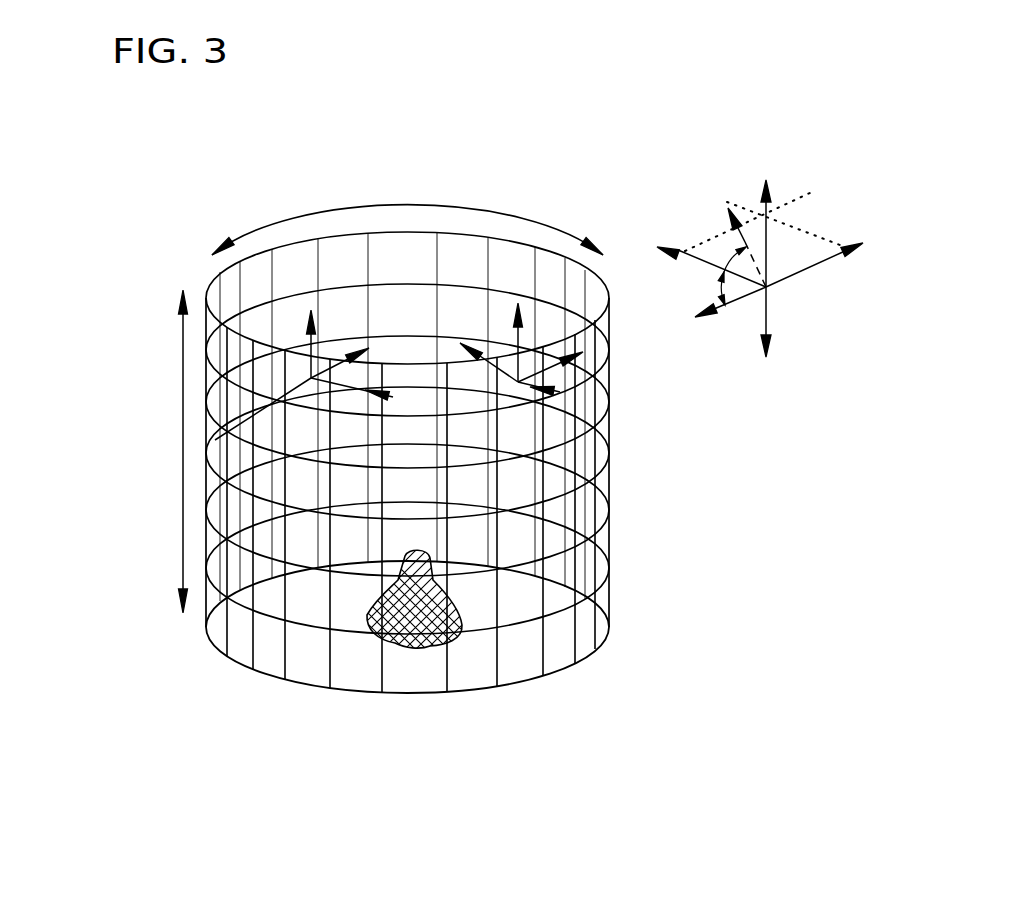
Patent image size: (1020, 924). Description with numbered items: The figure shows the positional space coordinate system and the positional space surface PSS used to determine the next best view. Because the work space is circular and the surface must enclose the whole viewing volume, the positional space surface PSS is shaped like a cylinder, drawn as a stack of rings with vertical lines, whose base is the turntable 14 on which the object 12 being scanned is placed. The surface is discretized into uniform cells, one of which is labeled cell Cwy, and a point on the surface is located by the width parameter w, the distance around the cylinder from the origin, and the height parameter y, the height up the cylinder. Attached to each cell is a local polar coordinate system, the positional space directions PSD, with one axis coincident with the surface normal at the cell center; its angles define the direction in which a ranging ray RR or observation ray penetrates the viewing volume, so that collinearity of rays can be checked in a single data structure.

The object 12 is at (489, 639).
The turntable 14 is at (440, 728).
The positional space surface PSS is at (644, 565).
The positional space directions PSD is at (582, 407).
The ranging ray RR is at (760, 268).
The width parameter w is at (486, 124).
The height parameter y is at (146, 424).
The cell Cwy is at (262, 440).